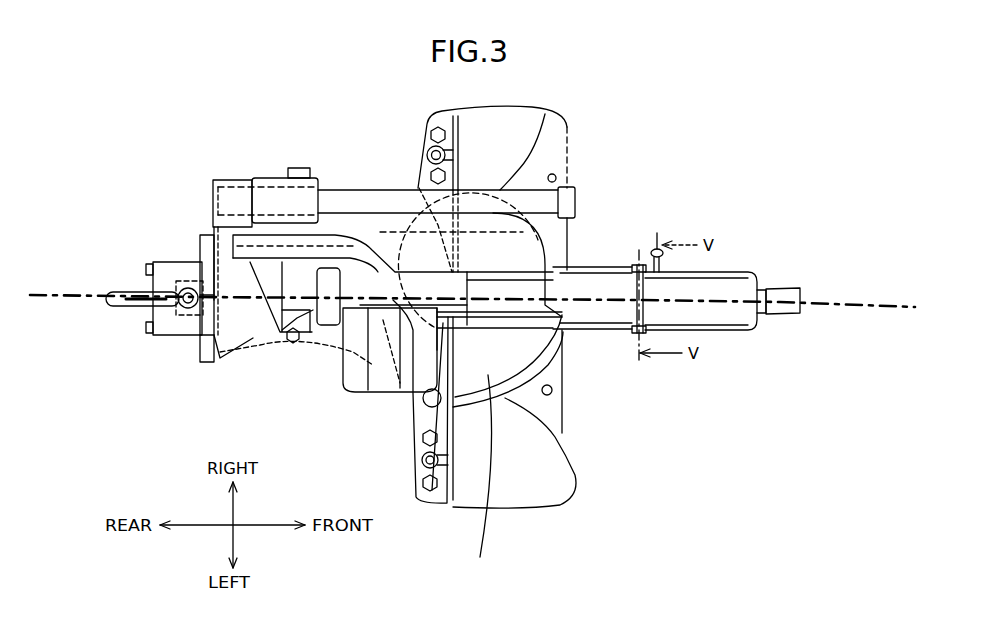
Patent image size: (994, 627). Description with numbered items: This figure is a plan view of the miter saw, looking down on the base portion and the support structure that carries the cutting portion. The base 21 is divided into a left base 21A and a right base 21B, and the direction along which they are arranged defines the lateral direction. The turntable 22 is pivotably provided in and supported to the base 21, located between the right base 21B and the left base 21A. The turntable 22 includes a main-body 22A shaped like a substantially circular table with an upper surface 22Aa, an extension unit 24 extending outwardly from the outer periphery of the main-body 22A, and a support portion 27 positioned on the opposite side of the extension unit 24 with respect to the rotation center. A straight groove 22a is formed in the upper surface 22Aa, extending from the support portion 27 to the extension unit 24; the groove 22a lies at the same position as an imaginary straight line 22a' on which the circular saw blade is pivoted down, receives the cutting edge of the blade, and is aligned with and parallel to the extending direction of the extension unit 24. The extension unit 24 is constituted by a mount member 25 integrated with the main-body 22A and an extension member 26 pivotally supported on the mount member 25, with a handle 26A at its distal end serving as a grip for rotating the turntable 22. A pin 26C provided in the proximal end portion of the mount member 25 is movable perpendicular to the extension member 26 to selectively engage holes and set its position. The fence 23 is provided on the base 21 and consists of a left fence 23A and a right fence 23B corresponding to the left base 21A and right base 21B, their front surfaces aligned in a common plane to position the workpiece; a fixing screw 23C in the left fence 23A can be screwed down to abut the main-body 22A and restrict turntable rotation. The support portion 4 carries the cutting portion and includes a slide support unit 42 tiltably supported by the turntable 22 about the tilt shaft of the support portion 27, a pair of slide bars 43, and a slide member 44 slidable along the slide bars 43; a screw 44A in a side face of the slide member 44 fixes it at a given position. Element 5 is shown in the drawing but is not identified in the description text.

The support portion 4 is at (212, 228).
The mount block 5 is at (357, 337).
The base 21 is at (506, 309).
The left base 21A is at (530, 493).
The right base 21B is at (511, 125).
The turntable 22 is at (553, 410).
The main-body 22A is at (520, 360).
The upper surface 22Aa is at (483, 485).
The groove 22a is at (472, 277).
The imaginary straight line 22a' is at (863, 277).
The fence 23 is at (395, 309).
The left fence 23A is at (423, 427).
The right fence 23B is at (430, 166).
The fixing screw 23C is at (423, 399).
The extension unit 24 is at (715, 333).
The mount member 25 is at (633, 333).
The extension member 26 is at (735, 330).
The handle 26A is at (790, 312).
The pin 26C is at (656, 248).
The support portion 27 is at (306, 345).
The slide support unit 42 is at (243, 292).
The slide bars 43 is at (345, 190).
The slide member 44 is at (276, 178).
The screw 44A is at (298, 167).